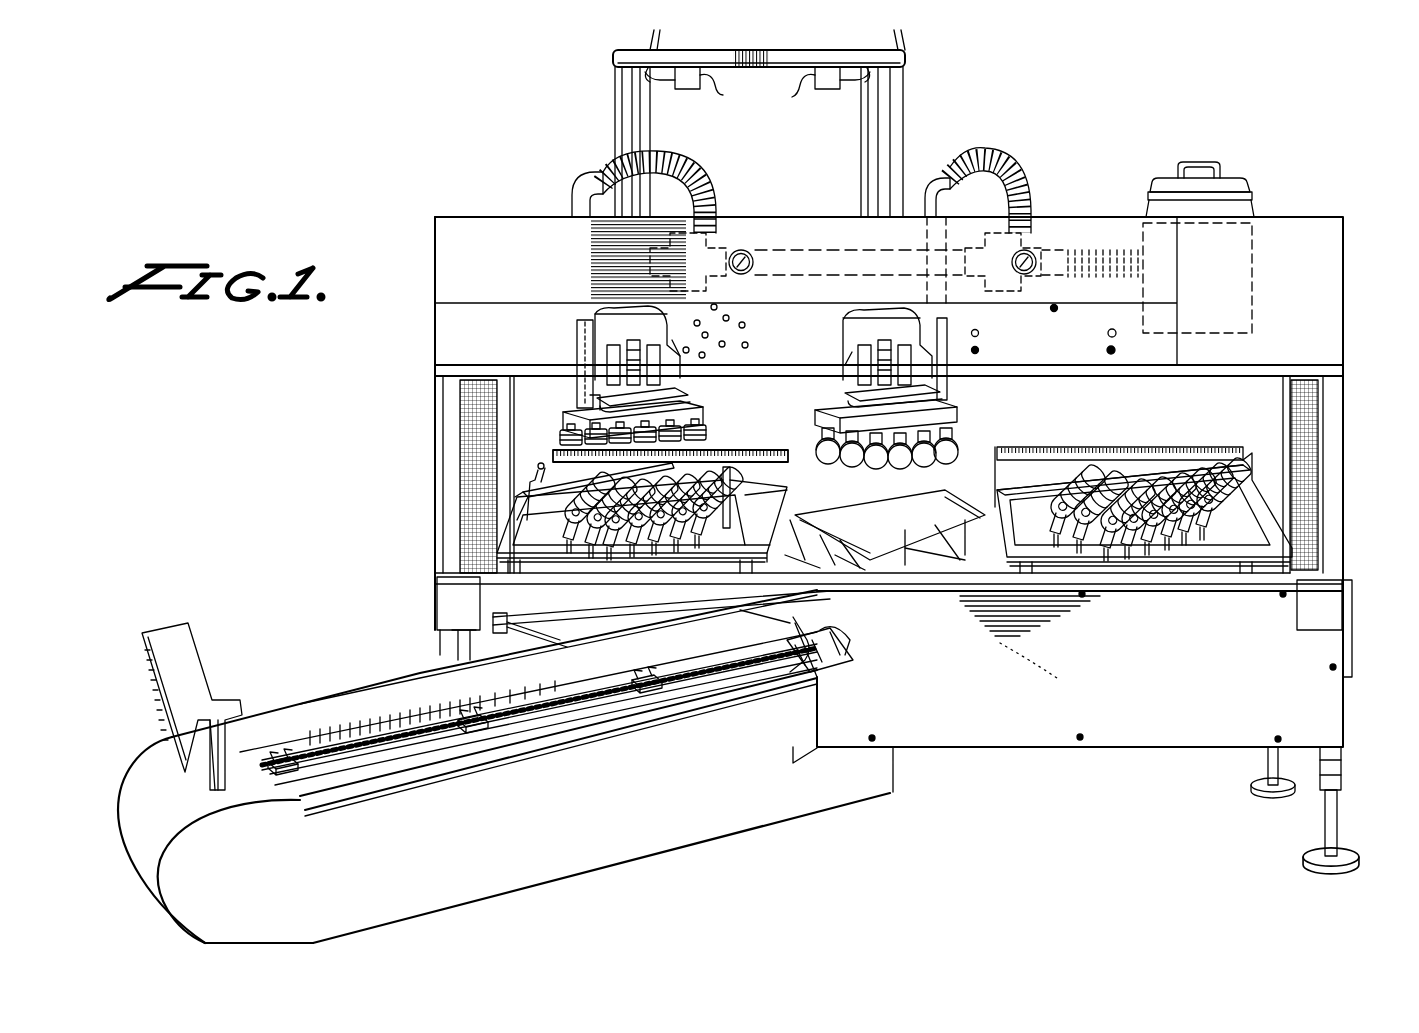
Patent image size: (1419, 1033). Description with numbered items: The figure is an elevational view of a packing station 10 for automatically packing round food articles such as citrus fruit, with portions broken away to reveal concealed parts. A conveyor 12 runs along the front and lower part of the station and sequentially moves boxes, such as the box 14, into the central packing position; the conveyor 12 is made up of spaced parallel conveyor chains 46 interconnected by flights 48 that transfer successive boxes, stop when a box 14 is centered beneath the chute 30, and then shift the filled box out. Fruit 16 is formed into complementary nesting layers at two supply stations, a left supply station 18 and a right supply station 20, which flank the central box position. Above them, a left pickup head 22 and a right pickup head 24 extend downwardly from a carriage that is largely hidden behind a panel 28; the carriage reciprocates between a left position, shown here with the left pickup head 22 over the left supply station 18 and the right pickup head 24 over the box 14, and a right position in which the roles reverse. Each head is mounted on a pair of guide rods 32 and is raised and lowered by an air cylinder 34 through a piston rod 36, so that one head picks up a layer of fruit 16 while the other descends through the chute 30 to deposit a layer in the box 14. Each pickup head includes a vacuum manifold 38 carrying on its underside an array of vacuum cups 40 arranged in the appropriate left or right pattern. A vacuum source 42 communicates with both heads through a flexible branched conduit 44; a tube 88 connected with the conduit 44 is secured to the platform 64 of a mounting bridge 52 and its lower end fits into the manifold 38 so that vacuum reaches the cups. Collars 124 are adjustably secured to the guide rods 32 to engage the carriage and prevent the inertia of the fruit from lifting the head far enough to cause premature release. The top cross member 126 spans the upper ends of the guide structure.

The packing station 10 is at (1035, 123).
The conveyor 12 is at (504, 766).
The box 14 is at (927, 628).
The fruit 16 is at (720, 467).
The left supply station 18 is at (538, 468).
The right supply station 20 is at (1125, 456).
The left pickup head 22 is at (703, 410).
The right pickup head 24 is at (962, 412).
The panel 28 is at (816, 226).
The chute 30 is at (895, 504).
The guide rods 32 is at (627, 106).
The air cylinders 34 is at (623, 130).
The piston rod 36 is at (633, 347).
The vacuum manifold 38 is at (706, 425).
The vacuum cups 40 is at (598, 456).
The vacuum source 42 is at (1240, 168).
The flexible branched conduit 44 is at (708, 172).
The conveyor chains 46 is at (739, 653).
The flights 48 is at (286, 755).
The mounting bridge 52 is at (672, 398).
The platform 64 is at (590, 401).
The tube 88 is at (578, 330).
The collars 124 is at (590, 353).
The top cross bar 126 is at (776, 50).